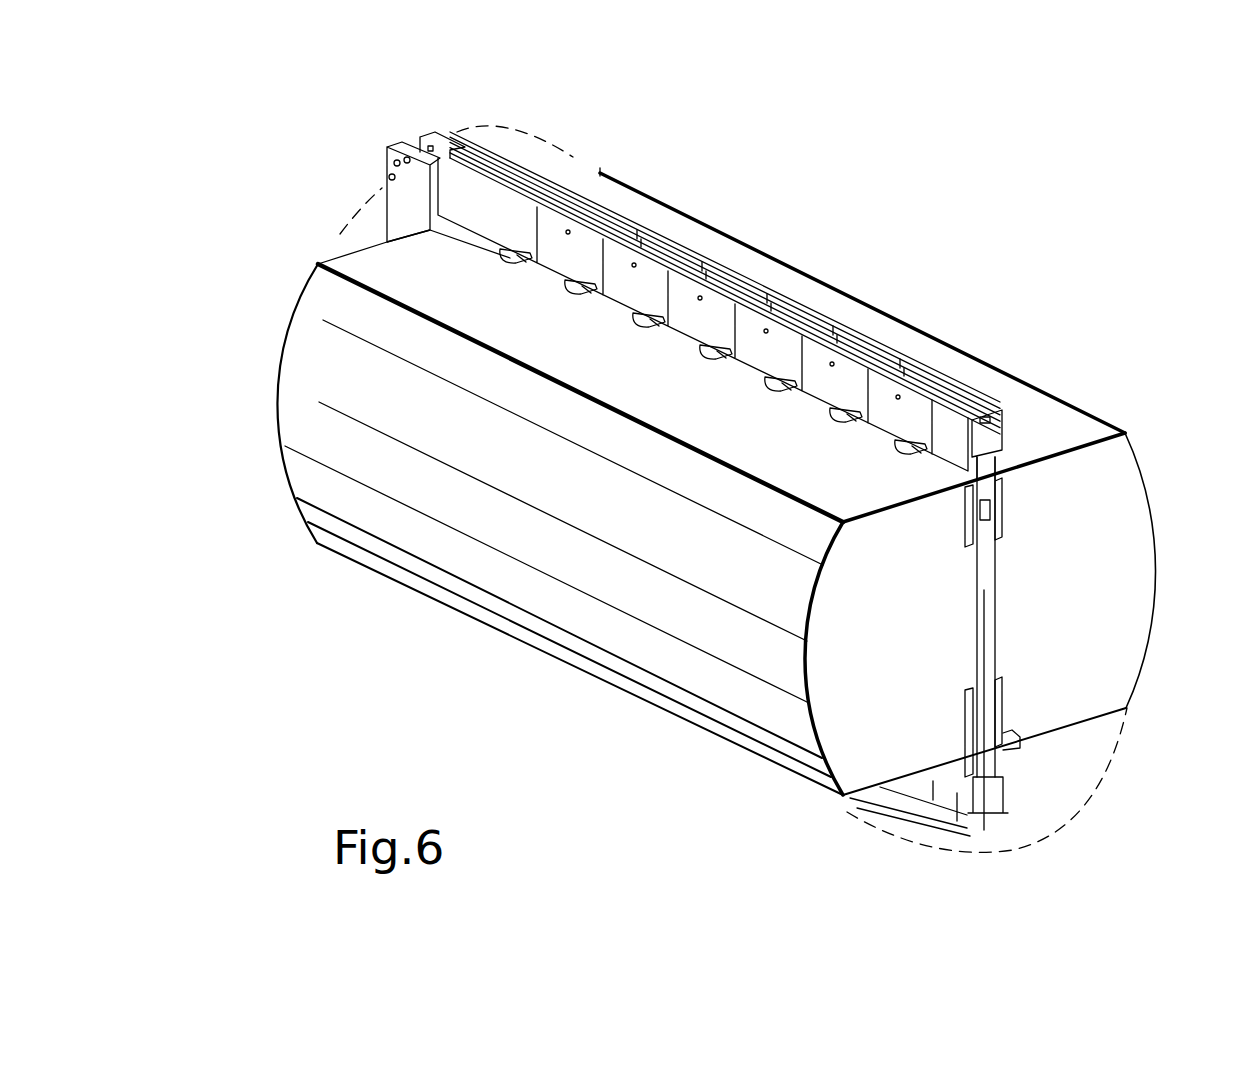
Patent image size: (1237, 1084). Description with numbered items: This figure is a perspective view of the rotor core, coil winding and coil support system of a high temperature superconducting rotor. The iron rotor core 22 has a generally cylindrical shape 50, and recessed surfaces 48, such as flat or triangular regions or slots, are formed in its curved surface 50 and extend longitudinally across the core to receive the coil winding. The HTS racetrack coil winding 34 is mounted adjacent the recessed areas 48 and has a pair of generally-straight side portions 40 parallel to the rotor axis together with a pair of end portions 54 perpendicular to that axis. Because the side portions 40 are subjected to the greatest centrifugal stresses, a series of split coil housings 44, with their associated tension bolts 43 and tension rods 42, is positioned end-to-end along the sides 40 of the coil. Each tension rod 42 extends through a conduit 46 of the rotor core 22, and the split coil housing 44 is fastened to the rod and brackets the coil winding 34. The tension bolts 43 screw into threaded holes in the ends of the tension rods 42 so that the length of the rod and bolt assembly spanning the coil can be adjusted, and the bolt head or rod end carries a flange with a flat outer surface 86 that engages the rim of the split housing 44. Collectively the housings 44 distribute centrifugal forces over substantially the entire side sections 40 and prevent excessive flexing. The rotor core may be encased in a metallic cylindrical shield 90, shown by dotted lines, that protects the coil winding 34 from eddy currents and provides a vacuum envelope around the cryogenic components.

The rotor core 22 is at (1075, 678).
The HTS racetrack coil winding 34 is at (998, 474).
The side portions 40 is at (832, 515).
The tension rod 42 is at (995, 638).
The tension bolt 43 is at (997, 519).
The split coil housing 44 is at (548, 178).
The conduit 46 is at (572, 292).
The recessed surfaces 48 is at (685, 250).
The cylindrical shape 50 is at (651, 598).
The end portions 54 is at (477, 141).
The flat outer surface 86 is at (995, 512).
The cylindrical shield 90 is at (337, 242).